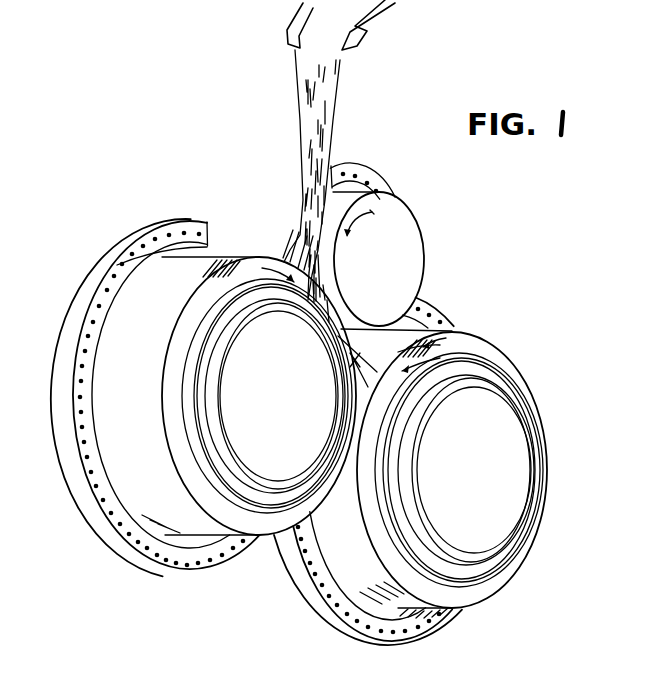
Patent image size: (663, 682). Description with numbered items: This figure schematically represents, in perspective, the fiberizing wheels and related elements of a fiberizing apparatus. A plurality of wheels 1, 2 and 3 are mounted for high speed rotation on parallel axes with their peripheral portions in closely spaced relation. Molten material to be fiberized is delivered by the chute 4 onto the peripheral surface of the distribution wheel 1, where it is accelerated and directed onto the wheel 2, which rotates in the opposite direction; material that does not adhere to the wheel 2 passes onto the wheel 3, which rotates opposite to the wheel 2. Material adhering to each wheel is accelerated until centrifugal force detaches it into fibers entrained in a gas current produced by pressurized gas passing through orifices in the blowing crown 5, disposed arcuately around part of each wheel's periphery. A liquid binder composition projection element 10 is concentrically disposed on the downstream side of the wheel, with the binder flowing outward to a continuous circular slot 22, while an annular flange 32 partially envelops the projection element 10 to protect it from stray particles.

The distribution wheel 1 is at (407, 229).
The wheel 2 is at (240, 275).
The wheel 3 is at (497, 353).
The chute 4 is at (367, 33).
The blowing crown 5 is at (113, 255).
The liquid binder composition projection element 10 is at (505, 412).
The continuous circular slot 22 is at (540, 441).
The flange 32 is at (433, 361).